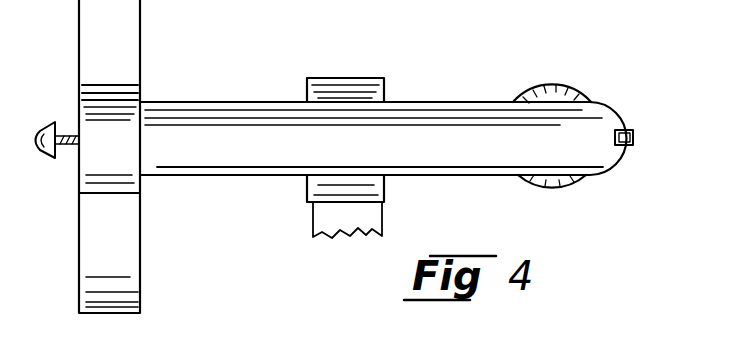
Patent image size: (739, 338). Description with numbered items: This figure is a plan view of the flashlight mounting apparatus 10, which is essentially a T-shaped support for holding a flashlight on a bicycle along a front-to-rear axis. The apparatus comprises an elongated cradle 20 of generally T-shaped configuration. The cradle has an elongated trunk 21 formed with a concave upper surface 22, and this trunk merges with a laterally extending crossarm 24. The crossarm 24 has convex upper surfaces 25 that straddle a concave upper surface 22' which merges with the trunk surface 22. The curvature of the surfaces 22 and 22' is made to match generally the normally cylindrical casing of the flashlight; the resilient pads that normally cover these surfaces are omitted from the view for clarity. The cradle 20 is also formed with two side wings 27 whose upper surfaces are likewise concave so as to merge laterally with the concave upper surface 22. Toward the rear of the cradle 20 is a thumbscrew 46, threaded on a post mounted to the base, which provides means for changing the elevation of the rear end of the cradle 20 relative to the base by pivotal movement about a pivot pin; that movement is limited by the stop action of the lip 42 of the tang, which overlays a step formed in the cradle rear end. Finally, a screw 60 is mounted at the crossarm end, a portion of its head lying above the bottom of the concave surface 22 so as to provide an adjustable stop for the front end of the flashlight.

The flashlight mounting apparatus 10 is at (534, 65).
The elongated cradle 20 is at (199, 65).
The elongated trunk 21 is at (446, 102).
The concave upper surface 22 is at (369, 95).
The concave upper surface 22' is at (109, 146).
The crossarm 24 is at (78, 23).
The convex upper surfaces 25 is at (110, 45).
The side wings 27 is at (347, 78).
The lip 42 is at (644, 124).
The thumbscrew 46 is at (565, 87).
The screw 60 is at (46, 159).